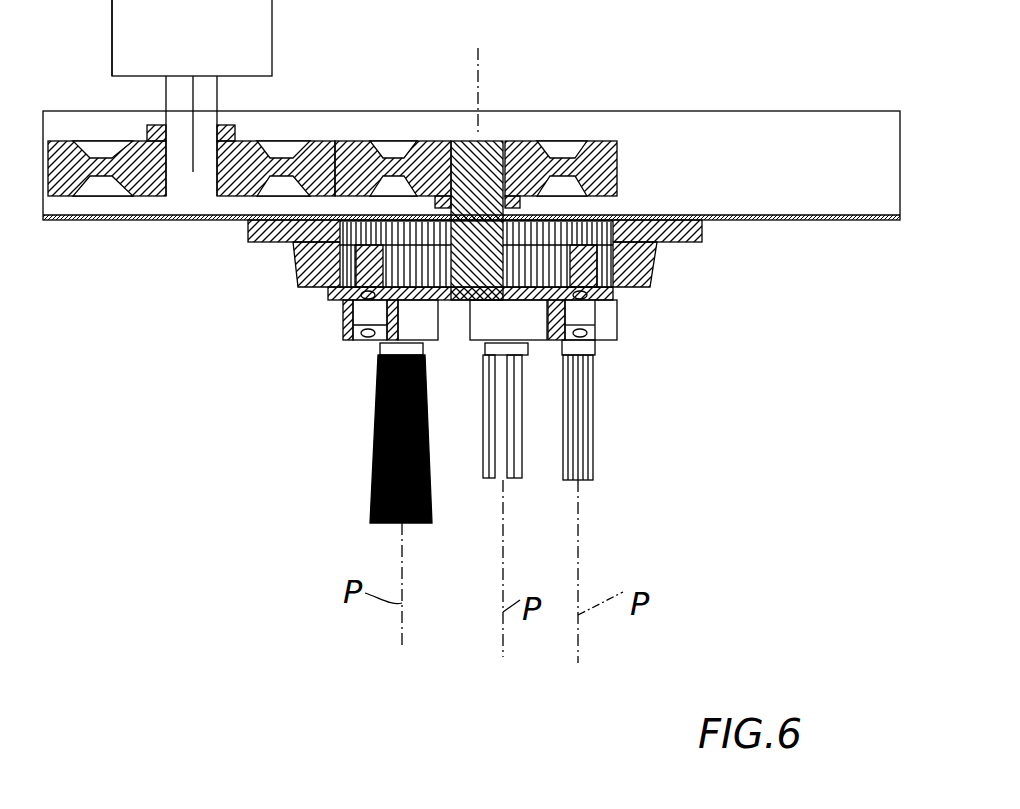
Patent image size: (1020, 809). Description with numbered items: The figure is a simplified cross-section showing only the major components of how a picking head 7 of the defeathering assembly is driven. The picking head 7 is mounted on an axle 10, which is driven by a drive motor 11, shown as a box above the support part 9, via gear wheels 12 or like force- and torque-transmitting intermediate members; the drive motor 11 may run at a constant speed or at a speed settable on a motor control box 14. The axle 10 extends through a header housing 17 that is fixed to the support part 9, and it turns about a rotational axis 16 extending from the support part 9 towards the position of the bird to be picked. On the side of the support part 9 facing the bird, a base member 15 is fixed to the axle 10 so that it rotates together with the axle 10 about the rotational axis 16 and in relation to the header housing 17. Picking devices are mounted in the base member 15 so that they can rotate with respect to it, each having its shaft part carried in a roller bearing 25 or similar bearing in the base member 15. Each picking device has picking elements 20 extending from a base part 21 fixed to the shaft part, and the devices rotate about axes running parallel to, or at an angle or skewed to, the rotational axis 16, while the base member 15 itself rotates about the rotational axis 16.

The picking head 7 is at (288, 342).
The support part 9 is at (853, 190).
The axle 10 is at (493, 155).
The drive motor 11 is at (253, 3).
The gear wheels 12 is at (432, 155).
The motor control box 14 is at (85, 38).
The base member 15 is at (465, 285).
The rotational axis 16 is at (480, 65).
The header housing 17 is at (638, 262).
The picking elements 20 is at (375, 463).
The base part 21 is at (380, 350).
The roller bearing 25 is at (347, 292).